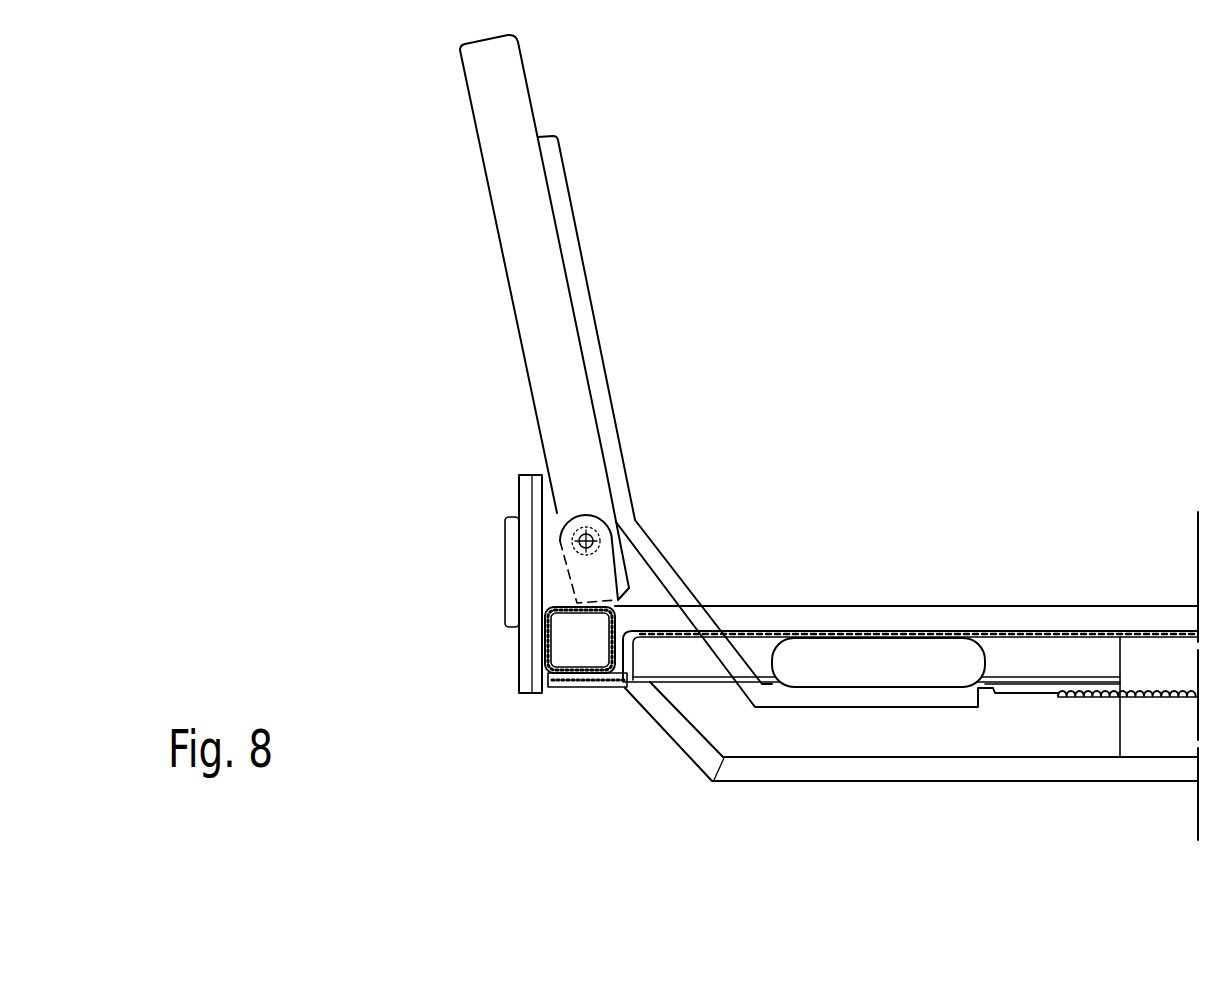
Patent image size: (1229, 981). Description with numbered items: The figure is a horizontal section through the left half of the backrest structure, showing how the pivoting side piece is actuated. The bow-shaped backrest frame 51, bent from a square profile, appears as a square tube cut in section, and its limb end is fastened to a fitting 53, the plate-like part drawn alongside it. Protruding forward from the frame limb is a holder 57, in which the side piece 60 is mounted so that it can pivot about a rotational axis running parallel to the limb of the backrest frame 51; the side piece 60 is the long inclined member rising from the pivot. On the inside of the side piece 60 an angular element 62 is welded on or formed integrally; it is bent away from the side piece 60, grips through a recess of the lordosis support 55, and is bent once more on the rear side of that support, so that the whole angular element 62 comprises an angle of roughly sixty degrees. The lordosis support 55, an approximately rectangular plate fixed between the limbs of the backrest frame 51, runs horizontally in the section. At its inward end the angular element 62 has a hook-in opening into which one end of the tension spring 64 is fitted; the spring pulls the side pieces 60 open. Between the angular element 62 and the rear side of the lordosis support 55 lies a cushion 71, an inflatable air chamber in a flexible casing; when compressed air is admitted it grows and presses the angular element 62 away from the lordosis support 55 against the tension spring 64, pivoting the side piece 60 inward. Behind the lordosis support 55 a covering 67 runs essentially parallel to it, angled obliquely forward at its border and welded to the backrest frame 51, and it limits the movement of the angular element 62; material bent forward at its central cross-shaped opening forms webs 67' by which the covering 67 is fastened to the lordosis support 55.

The backrest frame 51 is at (542, 690).
The fittings 53 is at (517, 585).
The lordosis support 55 is at (1070, 633).
The holders 57 is at (560, 580).
The side piece 60 is at (535, 302).
The angular element 62 is at (657, 565).
The tension spring 64 is at (1110, 696).
The covering 67 is at (911, 783).
The webs 67' is at (1153, 797).
The cushion 71 is at (870, 662).